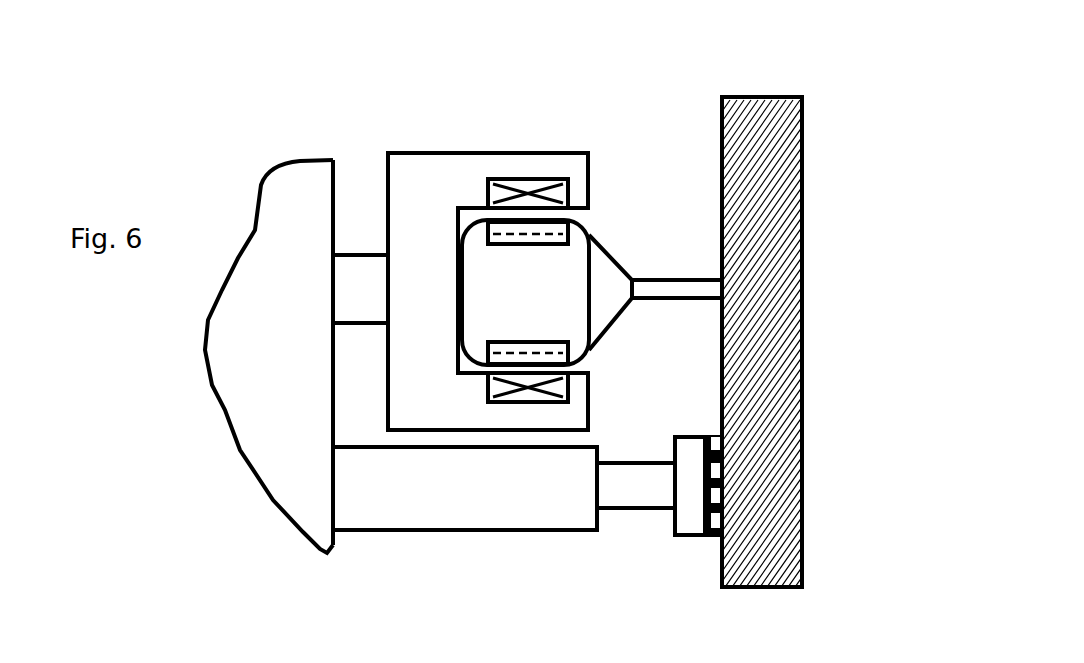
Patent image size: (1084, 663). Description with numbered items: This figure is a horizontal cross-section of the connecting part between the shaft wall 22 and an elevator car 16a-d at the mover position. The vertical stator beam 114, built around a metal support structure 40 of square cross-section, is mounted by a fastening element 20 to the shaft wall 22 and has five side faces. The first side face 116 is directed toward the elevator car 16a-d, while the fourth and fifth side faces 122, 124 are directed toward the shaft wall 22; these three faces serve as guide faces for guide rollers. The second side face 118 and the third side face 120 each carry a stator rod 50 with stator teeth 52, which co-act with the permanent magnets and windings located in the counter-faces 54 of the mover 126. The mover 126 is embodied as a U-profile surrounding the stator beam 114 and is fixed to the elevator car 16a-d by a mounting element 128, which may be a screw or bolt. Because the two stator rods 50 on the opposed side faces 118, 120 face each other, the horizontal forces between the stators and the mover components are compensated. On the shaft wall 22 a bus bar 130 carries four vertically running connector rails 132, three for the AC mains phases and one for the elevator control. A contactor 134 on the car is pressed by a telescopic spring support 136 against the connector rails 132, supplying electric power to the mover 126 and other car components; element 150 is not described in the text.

The elevator car 16a-d is at (268, 242).
The mover 126 is at (410, 231).
The support structure 40 is at (507, 290).
The stator rod 50 is at (499, 222).
The counter-face 54 is at (505, 224).
The stator teeth 52 is at (557, 217).
The second side face 118 is at (530, 217).
The vertical stator beam 114 is at (612, 218).
The shaft wall 22 is at (768, 143).
The fourth side face 122 is at (612, 252).
The fastening element 20 is at (678, 290).
The fifth side face 124 is at (615, 325).
The mounting element 128 is at (353, 288).
The first side face 116 is at (460, 292).
The third side face 120 is at (523, 363).
The telescopic spring support 136 is at (477, 502).
The contactor 134 is at (690, 487).
The connector rails 132 is at (722, 487).
The bus bar 130 is at (712, 548).
The base 150 is at (196, 660).